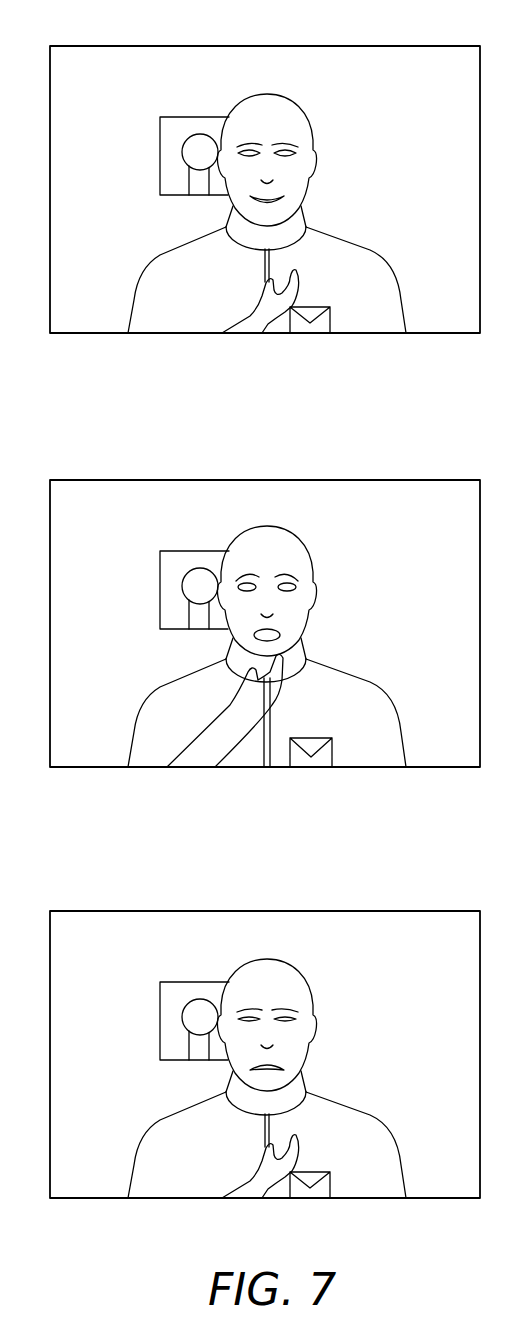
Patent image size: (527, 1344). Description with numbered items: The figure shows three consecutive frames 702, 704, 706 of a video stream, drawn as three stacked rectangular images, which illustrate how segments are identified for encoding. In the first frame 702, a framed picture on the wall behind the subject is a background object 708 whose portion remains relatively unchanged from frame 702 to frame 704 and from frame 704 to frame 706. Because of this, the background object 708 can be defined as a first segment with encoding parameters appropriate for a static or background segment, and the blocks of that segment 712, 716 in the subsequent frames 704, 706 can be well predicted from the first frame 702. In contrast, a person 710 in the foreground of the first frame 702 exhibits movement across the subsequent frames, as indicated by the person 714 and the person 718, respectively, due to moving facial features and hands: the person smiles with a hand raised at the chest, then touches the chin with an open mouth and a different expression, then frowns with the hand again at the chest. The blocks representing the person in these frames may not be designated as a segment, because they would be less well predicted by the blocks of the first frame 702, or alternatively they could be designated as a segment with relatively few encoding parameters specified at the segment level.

The first frame 702 is at (70, 44).
The second frame 704 is at (248, 610).
The third frame 706 is at (248, 1041).
The background object 708 is at (160, 153).
The person 710 is at (311, 132).
The segment blocks in second frame 712 is at (164, 590).
The person in second frame 714 is at (296, 592).
The segment blocks in third frame 716 is at (164, 1021).
The person in third frame 718 is at (296, 1025).